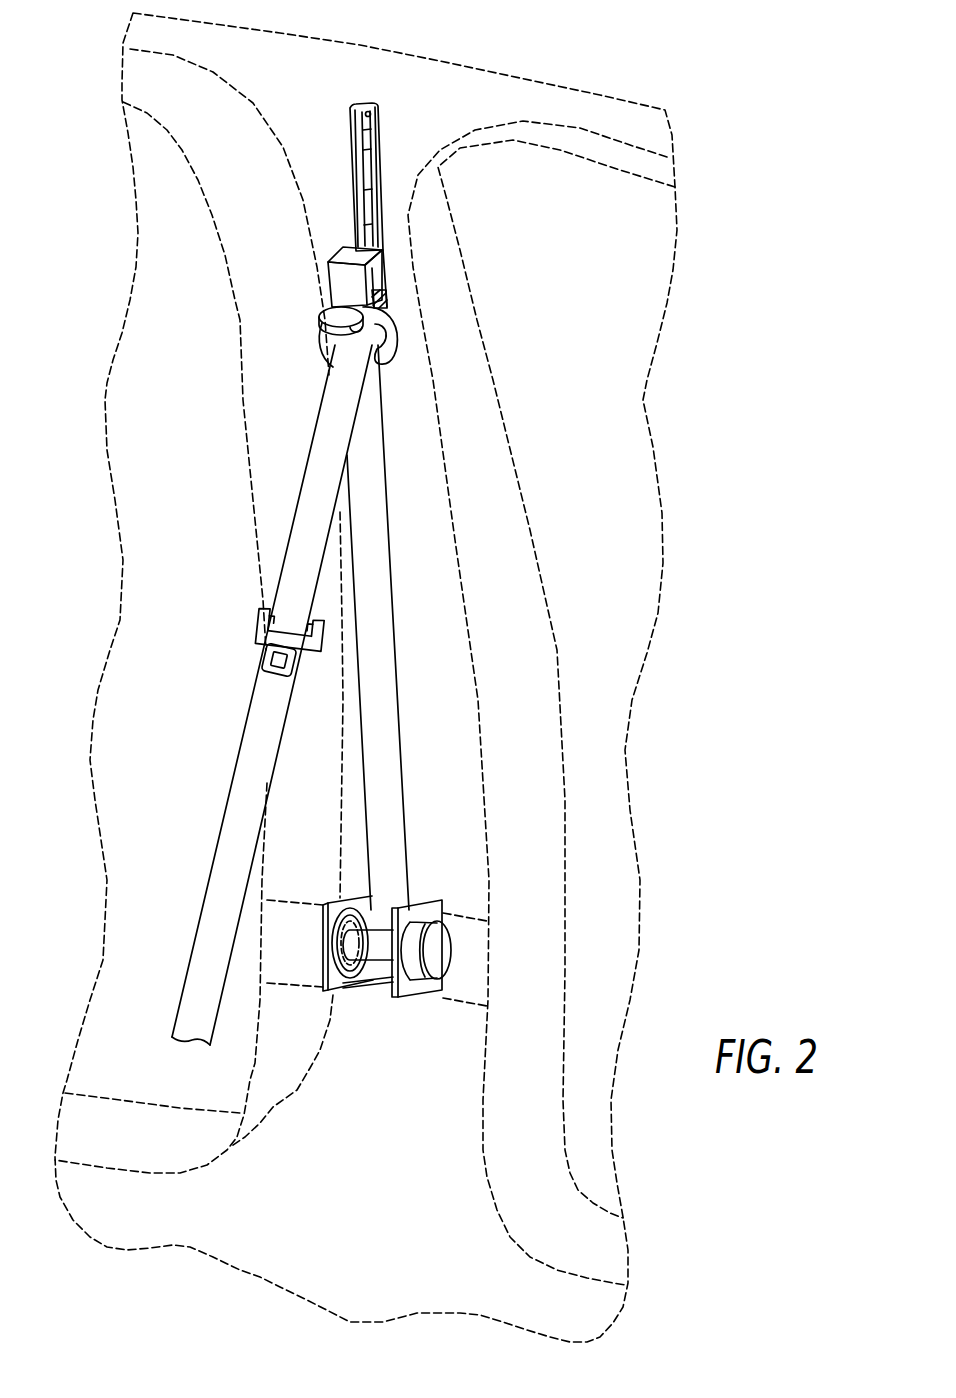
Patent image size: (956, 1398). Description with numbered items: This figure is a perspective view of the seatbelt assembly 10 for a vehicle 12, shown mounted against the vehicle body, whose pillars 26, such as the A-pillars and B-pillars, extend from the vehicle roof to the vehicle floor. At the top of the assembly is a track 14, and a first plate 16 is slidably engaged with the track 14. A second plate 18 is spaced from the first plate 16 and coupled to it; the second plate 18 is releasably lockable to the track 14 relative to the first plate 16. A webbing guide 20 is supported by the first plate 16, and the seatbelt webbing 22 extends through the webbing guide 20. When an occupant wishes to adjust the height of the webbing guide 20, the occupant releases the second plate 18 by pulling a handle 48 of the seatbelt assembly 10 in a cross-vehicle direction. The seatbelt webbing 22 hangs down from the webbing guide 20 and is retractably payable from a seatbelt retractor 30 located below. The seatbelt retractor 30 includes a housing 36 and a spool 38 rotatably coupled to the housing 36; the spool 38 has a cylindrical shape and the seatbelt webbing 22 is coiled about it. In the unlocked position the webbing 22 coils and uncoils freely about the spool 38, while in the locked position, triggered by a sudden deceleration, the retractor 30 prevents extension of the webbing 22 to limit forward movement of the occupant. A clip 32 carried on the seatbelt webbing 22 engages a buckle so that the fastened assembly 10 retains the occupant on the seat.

The seatbelt assembly 10 is at (420, 146).
The vehicle 12 is at (465, 43).
The track 14 is at (358, 103).
The first plate 16 is at (383, 250).
The second plate 18 is at (386, 296).
The webbing guide 20 is at (398, 337).
The seatbelt webbing 22 is at (384, 663).
The pillars 26 is at (520, 478).
The seatbelt retractor 30 is at (405, 966).
The clip 32 is at (269, 643).
The housing 36 is at (410, 988).
The spool 38 is at (437, 962).
The handle 48 is at (331, 310).